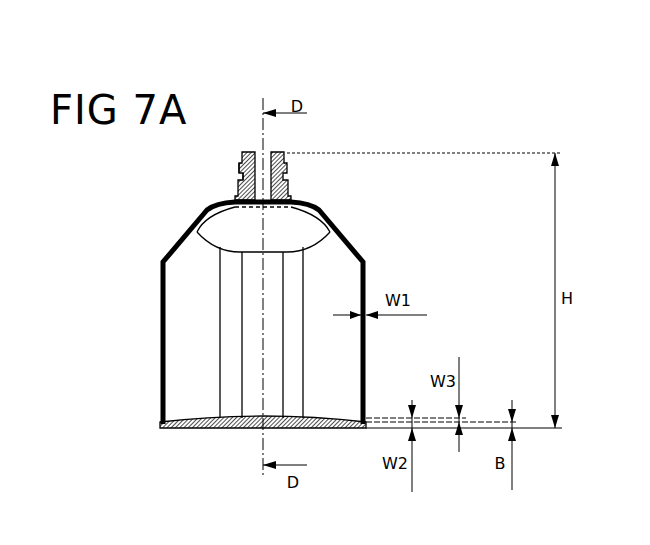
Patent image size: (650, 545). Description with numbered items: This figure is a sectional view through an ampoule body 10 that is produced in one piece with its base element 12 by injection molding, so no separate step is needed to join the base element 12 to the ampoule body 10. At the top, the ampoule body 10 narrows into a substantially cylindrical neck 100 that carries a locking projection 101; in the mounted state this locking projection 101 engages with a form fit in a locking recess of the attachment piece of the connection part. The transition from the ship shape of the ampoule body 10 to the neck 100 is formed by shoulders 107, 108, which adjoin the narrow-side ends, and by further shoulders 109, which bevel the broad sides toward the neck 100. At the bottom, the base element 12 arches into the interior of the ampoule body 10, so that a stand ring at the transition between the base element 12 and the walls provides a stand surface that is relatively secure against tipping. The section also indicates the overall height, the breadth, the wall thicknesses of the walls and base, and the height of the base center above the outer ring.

The ampoule body 10 is at (172, 331).
The base element 12 is at (312, 443).
The neck 100 is at (241, 159).
The locking projection 101 is at (239, 170).
The shoulder 107 is at (188, 233).
The shoulder 108 is at (341, 233).
The further shoulders 109 is at (299, 232).